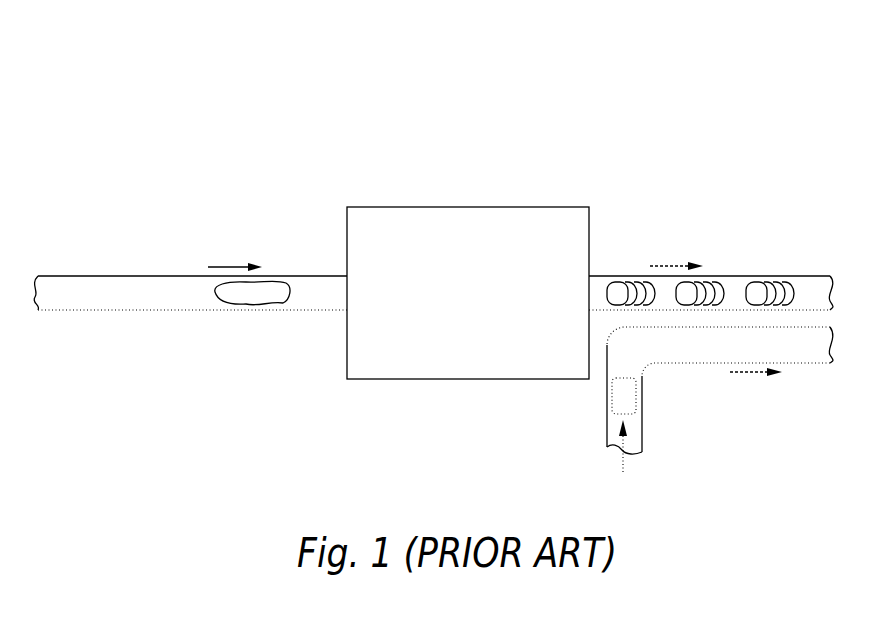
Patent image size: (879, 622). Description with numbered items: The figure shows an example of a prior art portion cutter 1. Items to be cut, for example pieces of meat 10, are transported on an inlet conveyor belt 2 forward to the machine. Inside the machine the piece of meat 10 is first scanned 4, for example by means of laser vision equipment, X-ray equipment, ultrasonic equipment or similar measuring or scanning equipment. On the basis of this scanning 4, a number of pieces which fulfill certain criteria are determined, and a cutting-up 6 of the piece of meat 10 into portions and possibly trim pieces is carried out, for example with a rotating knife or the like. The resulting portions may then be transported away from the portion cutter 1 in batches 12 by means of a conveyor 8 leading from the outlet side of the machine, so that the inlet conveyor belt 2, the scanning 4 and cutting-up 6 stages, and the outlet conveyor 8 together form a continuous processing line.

The portion cutter 1 is at (292, 150).
The inlet conveyor belt 2 is at (50, 276).
The scanning 4 is at (388, 240).
The cutting-up 6 is at (537, 240).
The conveyor 8 is at (777, 283).
The piece of meat 10 is at (247, 306).
The batches 12 is at (636, 283).